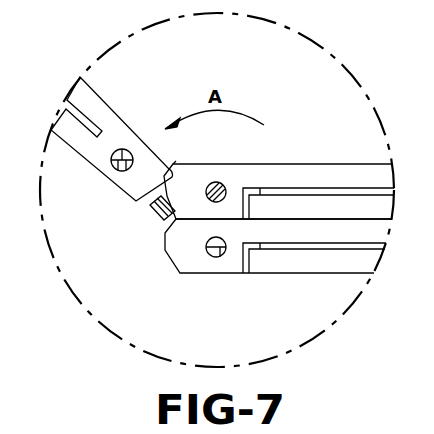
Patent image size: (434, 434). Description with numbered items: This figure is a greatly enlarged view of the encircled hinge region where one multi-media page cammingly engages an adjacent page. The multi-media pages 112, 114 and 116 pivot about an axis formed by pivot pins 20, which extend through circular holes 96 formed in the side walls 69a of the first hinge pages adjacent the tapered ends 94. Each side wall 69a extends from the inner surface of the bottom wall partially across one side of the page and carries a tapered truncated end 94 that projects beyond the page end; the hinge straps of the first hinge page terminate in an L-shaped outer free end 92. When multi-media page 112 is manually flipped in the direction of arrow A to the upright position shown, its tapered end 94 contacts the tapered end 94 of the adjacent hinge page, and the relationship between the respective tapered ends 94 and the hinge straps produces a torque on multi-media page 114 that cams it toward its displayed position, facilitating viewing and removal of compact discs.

The multi-media page 112 is at (102, 102).
The side wall 69a is at (132, 187).
The tapered truncated tab or end 94 is at (173, 165).
The L-shaped outer free end 92 is at (156, 224).
The pivot pin 20 is at (225, 187).
The multi-media page 114 is at (336, 174).
The circular hole 96 is at (216, 257).
The multi-media page 116 is at (278, 264).